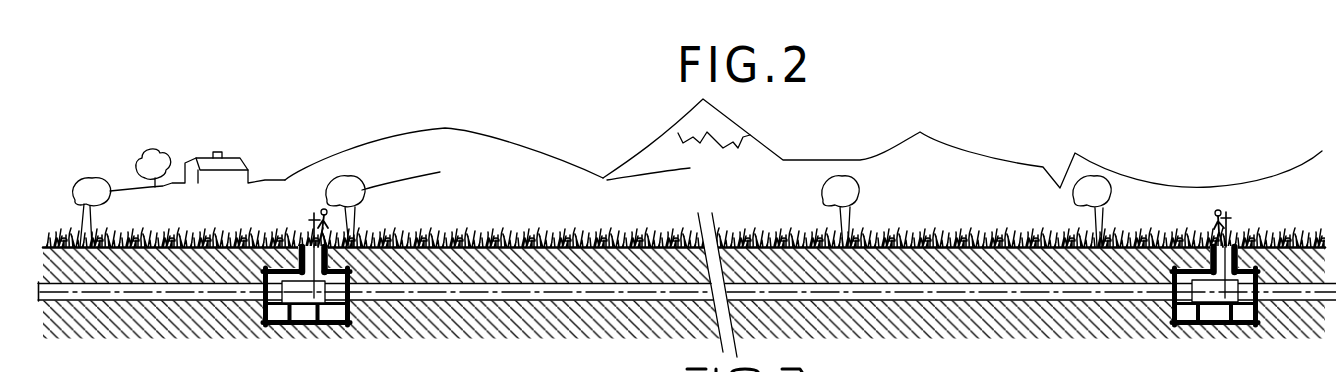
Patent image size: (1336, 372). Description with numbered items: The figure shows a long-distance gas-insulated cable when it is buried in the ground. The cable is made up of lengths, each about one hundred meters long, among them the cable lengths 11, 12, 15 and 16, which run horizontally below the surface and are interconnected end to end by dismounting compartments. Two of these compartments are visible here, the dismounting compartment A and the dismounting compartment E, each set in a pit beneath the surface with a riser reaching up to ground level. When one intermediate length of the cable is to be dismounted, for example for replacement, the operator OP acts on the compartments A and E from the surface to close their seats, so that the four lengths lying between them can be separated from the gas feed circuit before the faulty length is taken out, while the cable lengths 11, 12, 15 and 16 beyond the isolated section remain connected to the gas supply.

The cable length 11 is at (114, 295).
The cable length 12 is at (460, 297).
The cable length 15 is at (1015, 293).
The cable length 16 is at (1296, 292).
The dismounting compartment A is at (313, 325).
The dismounting compartment E is at (1215, 323).
The operator OP is at (323, 208).